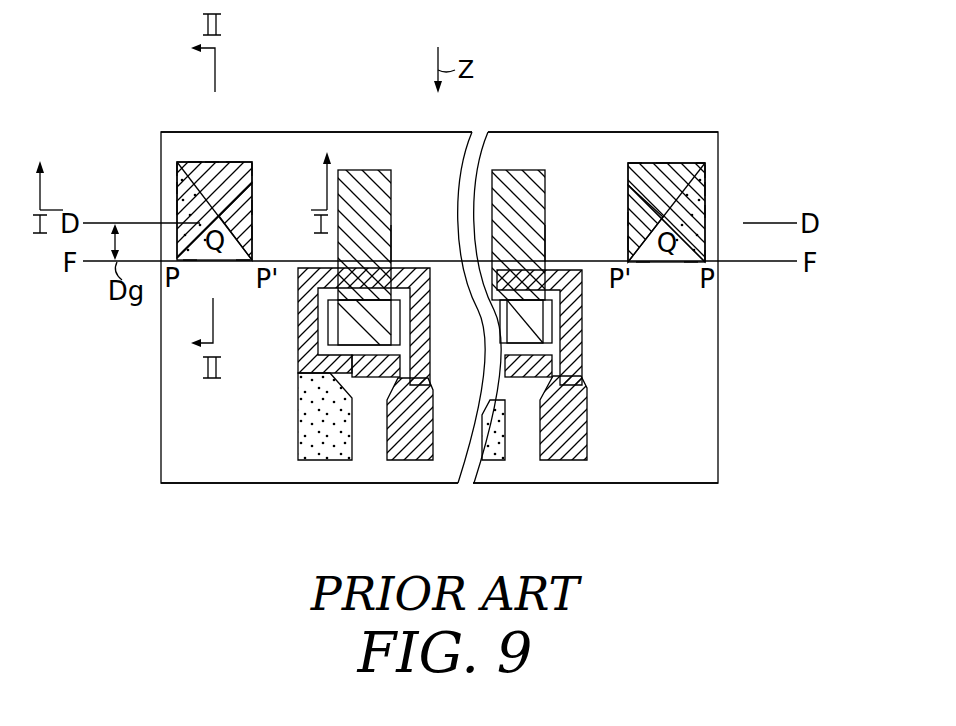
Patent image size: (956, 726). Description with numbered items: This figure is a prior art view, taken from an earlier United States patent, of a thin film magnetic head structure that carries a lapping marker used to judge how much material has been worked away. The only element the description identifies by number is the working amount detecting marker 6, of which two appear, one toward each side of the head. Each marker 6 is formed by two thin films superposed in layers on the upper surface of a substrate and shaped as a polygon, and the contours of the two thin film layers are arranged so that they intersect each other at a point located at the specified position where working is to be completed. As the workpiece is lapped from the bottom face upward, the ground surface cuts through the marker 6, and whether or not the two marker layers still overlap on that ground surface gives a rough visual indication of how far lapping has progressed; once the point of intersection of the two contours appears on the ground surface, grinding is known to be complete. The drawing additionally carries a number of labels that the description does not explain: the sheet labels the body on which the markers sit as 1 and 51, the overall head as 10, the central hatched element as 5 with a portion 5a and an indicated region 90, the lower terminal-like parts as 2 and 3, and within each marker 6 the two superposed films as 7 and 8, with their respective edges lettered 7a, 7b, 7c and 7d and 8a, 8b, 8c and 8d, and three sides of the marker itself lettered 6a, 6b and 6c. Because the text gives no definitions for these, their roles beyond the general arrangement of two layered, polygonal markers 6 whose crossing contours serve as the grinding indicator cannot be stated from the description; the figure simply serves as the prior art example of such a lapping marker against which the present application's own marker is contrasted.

The substrate 1 is at (161, 383).
The lead terminal 2 is at (333, 455).
The lead terminal 3 is at (408, 455).
The upper magnetic core 5 is at (365, 170).
The pole tip portion of upper core 5a is at (375, 250).
The working amount detecting marker 6 is at (223, 150).
The side of pole layer 6a is at (177, 208).
The side of pole layer 6b is at (252, 208).
The side of pole layer 6c is at (195, 162).
The first magnetic layer 7 is at (177, 238).
The edge of first magnetic layer 7a is at (212, 162).
The edge of first magnetic layer 7b is at (177, 188).
The edge of first magnetic layer 7c is at (252, 165).
The edge of first magnetic layer 7d is at (190, 262).
The second magnetic layer 8 is at (237, 262).
The edge of second magnetic layer 8a is at (233, 162).
The edge of second magnetic layer 8b is at (252, 232).
The edge of second magnetic layer 8c is at (177, 168).
The edge of second magnetic layer 8d is at (242, 262).
The thin film magnetic head 10 is at (438, 132).
The slider 51 is at (212, 467).
The track width portion 90 is at (367, 205).